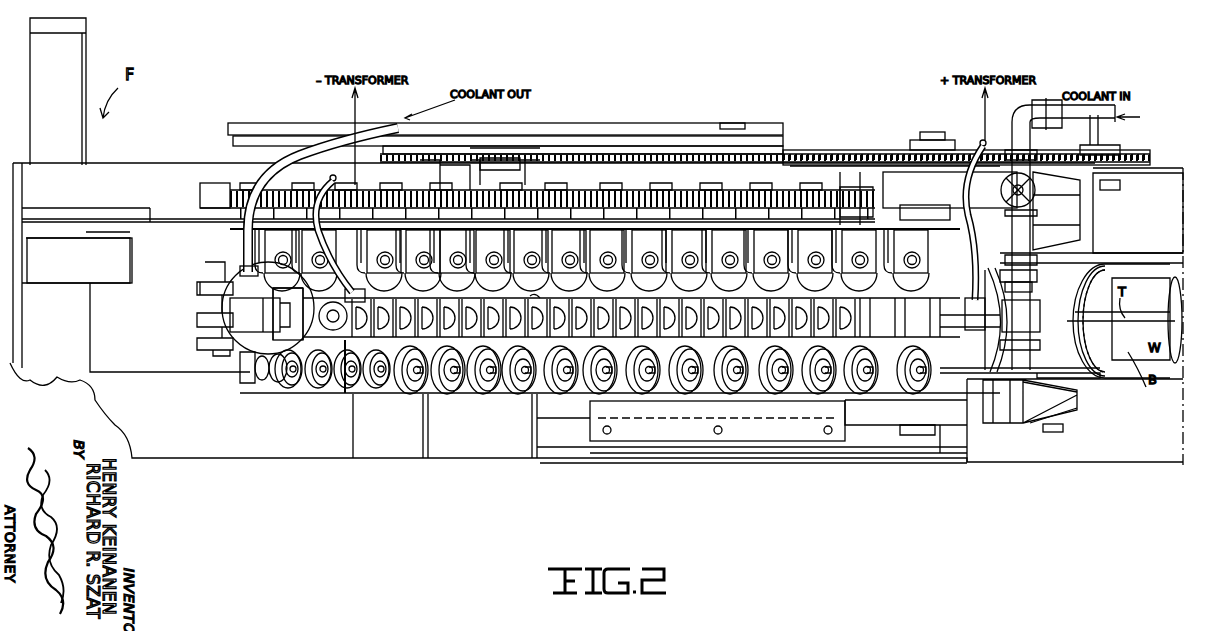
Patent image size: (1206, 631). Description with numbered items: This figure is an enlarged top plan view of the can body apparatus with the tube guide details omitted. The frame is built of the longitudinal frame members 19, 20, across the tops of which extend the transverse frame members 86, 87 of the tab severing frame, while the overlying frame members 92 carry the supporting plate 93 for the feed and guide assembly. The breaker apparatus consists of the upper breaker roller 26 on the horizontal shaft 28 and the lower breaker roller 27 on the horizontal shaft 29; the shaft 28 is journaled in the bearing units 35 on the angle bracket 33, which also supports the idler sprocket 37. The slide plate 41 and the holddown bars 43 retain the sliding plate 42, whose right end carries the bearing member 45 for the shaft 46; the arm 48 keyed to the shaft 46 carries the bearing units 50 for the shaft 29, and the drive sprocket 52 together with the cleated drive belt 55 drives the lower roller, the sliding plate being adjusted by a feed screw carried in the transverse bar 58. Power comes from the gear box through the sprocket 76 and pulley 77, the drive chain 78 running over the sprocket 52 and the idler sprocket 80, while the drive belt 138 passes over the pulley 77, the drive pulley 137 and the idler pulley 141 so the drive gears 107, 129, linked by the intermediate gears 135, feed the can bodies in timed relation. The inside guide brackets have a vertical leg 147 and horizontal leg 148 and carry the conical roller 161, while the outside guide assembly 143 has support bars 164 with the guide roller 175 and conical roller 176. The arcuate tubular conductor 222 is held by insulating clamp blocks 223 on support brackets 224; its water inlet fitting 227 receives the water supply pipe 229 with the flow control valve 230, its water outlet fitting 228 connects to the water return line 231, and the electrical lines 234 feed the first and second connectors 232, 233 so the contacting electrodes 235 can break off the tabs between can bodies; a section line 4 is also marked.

The section line 4 is at (1164, 297).
The longitudinal frame member 19 is at (1150, 173).
The longitudinal frame member 20 is at (292, 452).
The upper breaker roller 26 is at (1093, 357).
The lower breaker roller 27 is at (1168, 257).
The horizontal shaft 28 is at (1077, 382).
The horizontal shaft 29 is at (1050, 433).
The second angle bracket 33 is at (1125, 190).
The bearing unit 35 is at (1090, 230).
The idler sprocket 37 is at (1108, 155).
The slide plate 41 is at (828, 448).
The sliding plate 42 is at (880, 425).
The holddown bar 43 is at (768, 442).
The bearing member 45 is at (905, 440).
The shaft 46 is at (945, 132).
The arm 48 is at (980, 415).
The bearing unit 50 is at (1072, 408).
The drive sprocket 52 is at (925, 140).
The cleated drive belt 55 is at (930, 215).
The transverse bar 58 is at (520, 452).
The sprocket 76 is at (535, 150).
The pulley 77 is at (262, 122).
The drive chain 78 is at (820, 150).
The idler sprocket 80 is at (795, 150).
The transverse frame member 86 is at (72, 332).
The transverse frame member 87 is at (402, 455).
The frame member 92 is at (110, 163).
The supporting plate 93 is at (100, 216).
The drive gear 107 is at (888, 195).
The drive gear 129 is at (780, 190).
The intermediate gear 135 is at (840, 165).
The drive pulley 137 is at (490, 140).
The drive belt 138 is at (610, 145).
The idler pulley 141 is at (755, 123).
The outside guide assembly 143 is at (445, 394).
The vertical leg 147 is at (712, 283).
The horizontal leg 148 is at (195, 235).
The conical roller 161 is at (515, 296).
The support bar 164 is at (248, 390).
The guide roller 175 is at (268, 395).
The conical roller 176 is at (295, 392).
The tubular conductor 222 is at (925, 337).
The clamp block 223 is at (965, 380).
The support bracket 224 is at (240, 360).
The water inlet fitting 227 is at (1040, 318).
The water outlet fitting 228 is at (228, 315).
The water supply pipe 229 is at (1035, 292).
The flow control valve 230 is at (995, 122).
The water return line 231 is at (272, 155).
The first connector 232 is at (960, 310).
The second connector 233 is at (345, 296).
The electrical lines 234 is at (323, 181).
The contacting electrode 235 is at (595, 298).